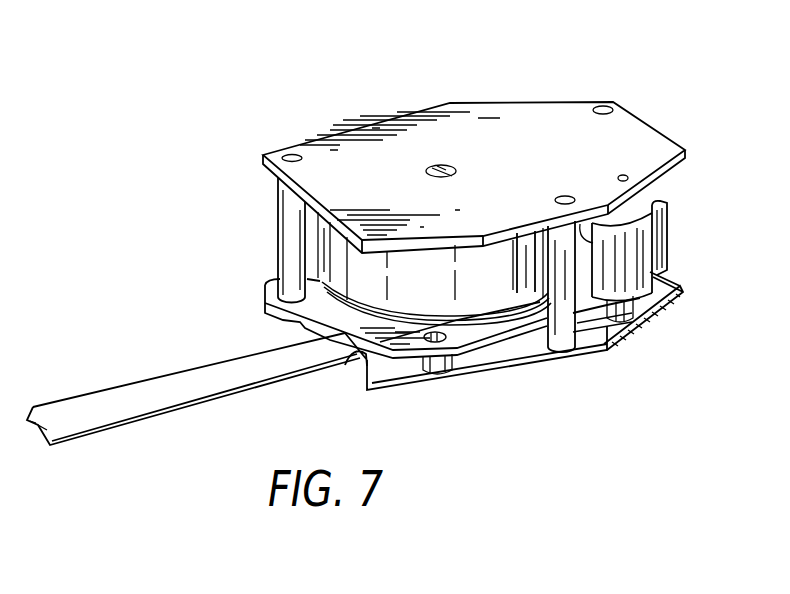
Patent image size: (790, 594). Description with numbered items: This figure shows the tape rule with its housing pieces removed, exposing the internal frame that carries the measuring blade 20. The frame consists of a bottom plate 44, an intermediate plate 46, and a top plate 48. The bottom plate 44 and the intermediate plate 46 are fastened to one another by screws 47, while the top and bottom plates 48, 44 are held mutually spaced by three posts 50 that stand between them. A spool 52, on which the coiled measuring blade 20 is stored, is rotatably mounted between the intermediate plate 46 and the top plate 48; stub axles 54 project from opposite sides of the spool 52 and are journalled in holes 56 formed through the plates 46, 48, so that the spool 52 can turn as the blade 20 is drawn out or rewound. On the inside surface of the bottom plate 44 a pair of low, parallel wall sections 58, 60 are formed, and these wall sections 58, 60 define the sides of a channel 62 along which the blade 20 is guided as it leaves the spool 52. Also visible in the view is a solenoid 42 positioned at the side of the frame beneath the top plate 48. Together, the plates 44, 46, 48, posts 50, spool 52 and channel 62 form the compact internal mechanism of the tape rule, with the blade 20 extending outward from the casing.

The blade 20 is at (103, 403).
The solenoid 42 is at (645, 212).
The bottom plate 44 is at (602, 337).
The intermediate plate 46 is at (512, 325).
The screws 47 is at (433, 332).
The top plate 48 is at (494, 127).
The posts 50 is at (290, 241).
The spool 52 is at (325, 278).
The stub axles 54 is at (437, 170).
The holes 56 is at (452, 176).
The wall section 58 is at (272, 313).
The wall section 60 is at (510, 347).
The channel 62 is at (355, 350).